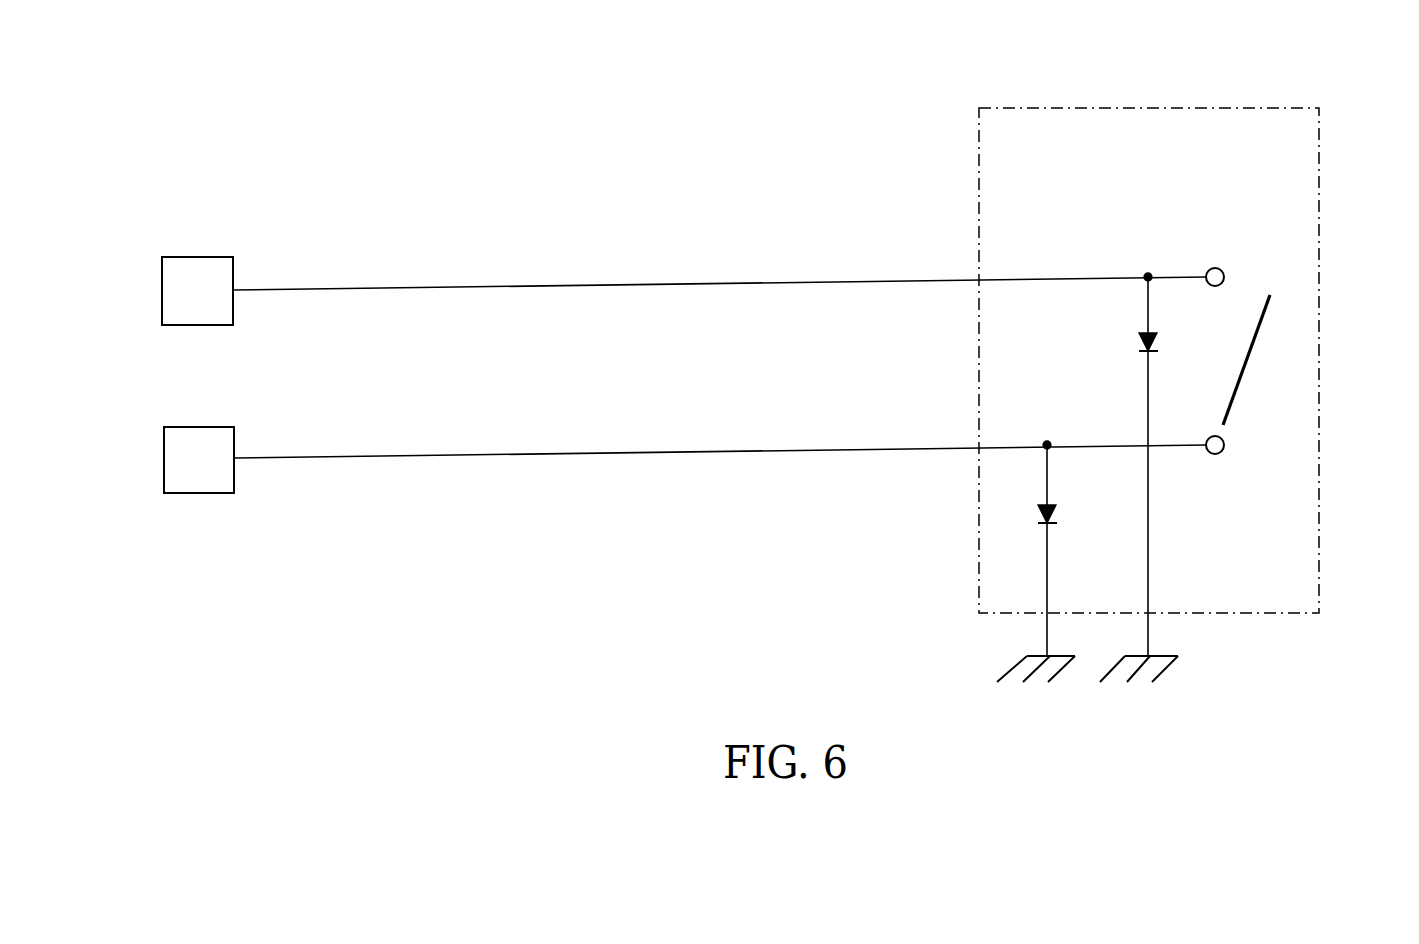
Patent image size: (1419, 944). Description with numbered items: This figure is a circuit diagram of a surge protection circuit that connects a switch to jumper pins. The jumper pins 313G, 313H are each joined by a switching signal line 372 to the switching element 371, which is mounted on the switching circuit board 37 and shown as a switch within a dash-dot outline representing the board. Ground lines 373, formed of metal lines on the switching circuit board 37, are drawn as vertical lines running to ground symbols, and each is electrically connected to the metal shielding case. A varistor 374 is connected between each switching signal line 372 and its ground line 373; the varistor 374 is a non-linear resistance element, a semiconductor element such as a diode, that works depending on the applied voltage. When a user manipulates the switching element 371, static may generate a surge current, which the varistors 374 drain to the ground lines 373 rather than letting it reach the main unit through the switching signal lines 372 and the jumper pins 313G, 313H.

The switching circuit board 37 is at (1180, 105).
The jumper pin 313G is at (194, 257).
The jumper pin 313H is at (188, 427).
The switching signal line 372 is at (660, 282).
The switching element 371 is at (1253, 347).
The ground line 373 is at (1150, 530).
The varistor 374 is at (1140, 340).